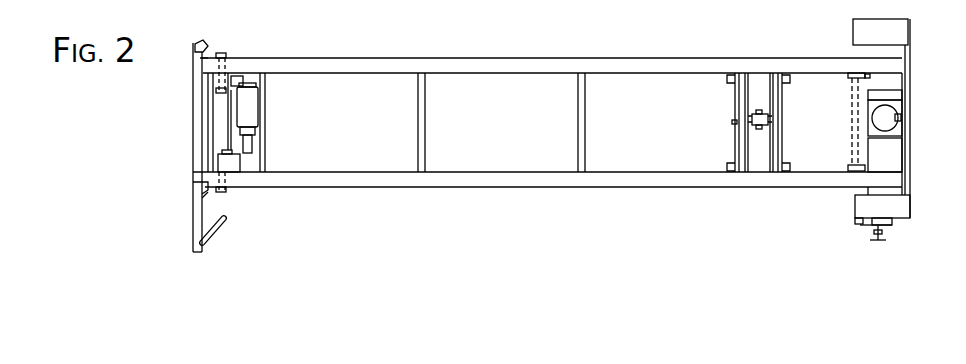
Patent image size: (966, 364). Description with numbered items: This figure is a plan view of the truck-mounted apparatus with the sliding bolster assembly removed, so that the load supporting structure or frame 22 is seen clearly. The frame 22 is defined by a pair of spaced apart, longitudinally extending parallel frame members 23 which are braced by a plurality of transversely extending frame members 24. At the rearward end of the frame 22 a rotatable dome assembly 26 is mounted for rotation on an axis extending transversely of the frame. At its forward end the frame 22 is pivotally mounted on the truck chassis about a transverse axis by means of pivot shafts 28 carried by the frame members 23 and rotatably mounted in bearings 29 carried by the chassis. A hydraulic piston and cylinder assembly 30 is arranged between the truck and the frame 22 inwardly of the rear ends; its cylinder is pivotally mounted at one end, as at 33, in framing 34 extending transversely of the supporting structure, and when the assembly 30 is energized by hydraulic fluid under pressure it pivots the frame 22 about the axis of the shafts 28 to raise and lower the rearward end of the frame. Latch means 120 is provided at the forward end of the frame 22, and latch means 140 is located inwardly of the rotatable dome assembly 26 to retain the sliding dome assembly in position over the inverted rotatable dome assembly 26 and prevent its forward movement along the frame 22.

The load supporting structure or frame 22 is at (547, 123).
The longitudinally extending parallel frame members 23 is at (480, 63).
The transversely extending frame members 24 is at (268, 111).
The rotatable dome assembly 26 is at (903, 102).
The pivot shafts 28 is at (222, 52).
The bearings 29 is at (242, 75).
The hydraulic piston and cylinder assembly 30 is at (730, 122).
The pivotal mounting of the cylinder 33 is at (768, 118).
The framing 34 is at (771, 72).
The latch means 120 is at (212, 242).
The latch means 140 is at (847, 163).